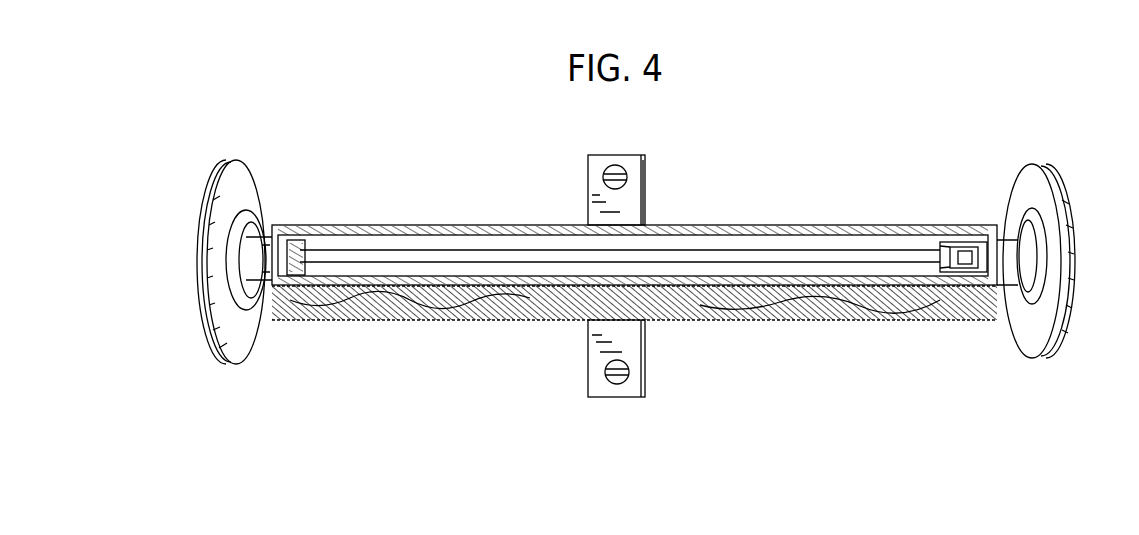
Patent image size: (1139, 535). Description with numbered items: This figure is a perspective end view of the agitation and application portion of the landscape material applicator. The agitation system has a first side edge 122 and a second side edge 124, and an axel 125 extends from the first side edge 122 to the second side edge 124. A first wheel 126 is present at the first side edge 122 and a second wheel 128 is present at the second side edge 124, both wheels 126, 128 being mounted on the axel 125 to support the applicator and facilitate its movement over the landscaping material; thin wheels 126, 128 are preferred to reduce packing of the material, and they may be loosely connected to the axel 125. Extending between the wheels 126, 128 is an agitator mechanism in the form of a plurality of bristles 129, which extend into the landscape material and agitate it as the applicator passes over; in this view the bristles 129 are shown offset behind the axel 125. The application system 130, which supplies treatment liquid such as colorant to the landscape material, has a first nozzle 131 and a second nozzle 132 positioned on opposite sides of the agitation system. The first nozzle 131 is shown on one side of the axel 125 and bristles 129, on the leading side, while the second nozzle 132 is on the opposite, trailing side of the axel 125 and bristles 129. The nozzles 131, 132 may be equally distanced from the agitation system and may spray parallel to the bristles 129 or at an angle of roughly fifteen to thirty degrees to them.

The first side edge 122 is at (206, 317).
The second side edge 124 is at (1066, 205).
The axel 125 is at (808, 253).
The first wheel 126 is at (216, 186).
The second wheel 128 is at (1054, 338).
The bristles 129 is at (905, 310).
The application system 130 is at (588, 390).
The first nozzle 131 is at (625, 172).
The second nozzle 132 is at (626, 380).